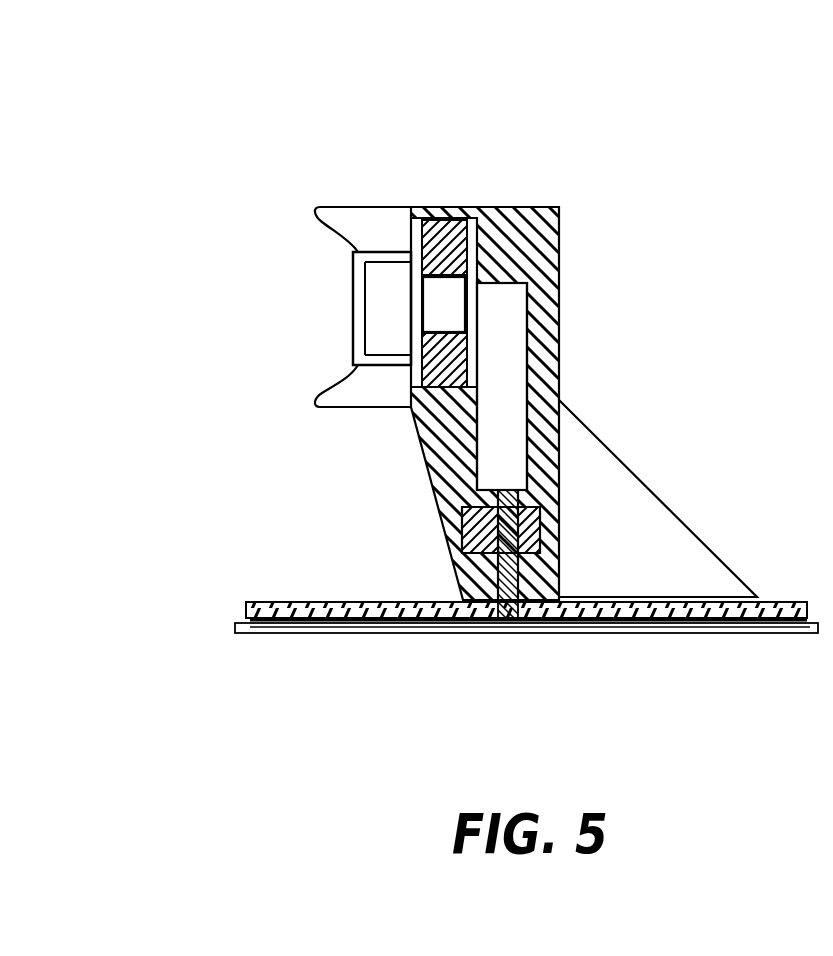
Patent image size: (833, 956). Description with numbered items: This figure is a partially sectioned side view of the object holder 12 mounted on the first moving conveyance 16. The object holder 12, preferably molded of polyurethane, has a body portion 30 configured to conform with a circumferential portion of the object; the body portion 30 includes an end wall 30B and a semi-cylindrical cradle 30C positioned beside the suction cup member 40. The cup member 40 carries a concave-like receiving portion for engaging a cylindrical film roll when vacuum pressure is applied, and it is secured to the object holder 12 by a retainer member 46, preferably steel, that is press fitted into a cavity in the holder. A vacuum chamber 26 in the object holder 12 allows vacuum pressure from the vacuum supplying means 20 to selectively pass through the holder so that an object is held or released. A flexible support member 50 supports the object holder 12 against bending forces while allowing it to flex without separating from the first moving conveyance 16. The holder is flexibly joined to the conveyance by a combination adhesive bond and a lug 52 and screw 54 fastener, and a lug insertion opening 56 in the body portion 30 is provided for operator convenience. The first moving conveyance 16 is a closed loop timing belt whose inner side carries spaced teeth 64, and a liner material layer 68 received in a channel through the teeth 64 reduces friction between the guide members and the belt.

The means for supplying a vacuum force 20 is at (408, 88).
The object holder 12 is at (503, 184).
The body portion 30 is at (560, 244).
The end wall 30B is at (337, 207).
The semi-cylindrical cradle 30C is at (338, 383).
The vacuum chamber 26 is at (515, 352).
The retainer member 46 is at (384, 207).
The cup member 40 is at (352, 274).
The flexible support member 50 is at (650, 490).
The lug 52 is at (545, 520).
The screw 54 is at (545, 583).
The lug insertion opening 56 is at (462, 530).
The first moving conveyance 16 is at (768, 600).
The spaced teeth 64 is at (320, 633).
The liner material layer 68 is at (670, 627).